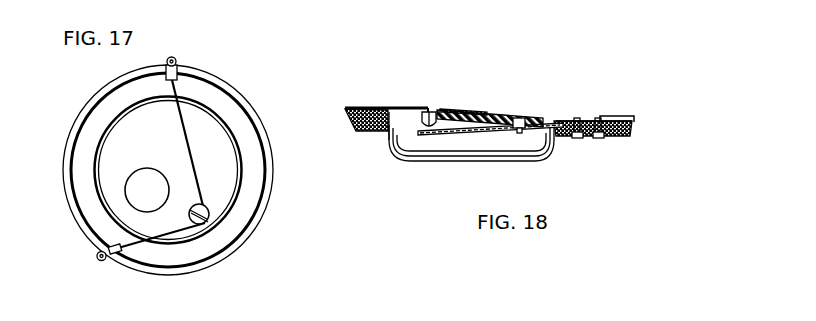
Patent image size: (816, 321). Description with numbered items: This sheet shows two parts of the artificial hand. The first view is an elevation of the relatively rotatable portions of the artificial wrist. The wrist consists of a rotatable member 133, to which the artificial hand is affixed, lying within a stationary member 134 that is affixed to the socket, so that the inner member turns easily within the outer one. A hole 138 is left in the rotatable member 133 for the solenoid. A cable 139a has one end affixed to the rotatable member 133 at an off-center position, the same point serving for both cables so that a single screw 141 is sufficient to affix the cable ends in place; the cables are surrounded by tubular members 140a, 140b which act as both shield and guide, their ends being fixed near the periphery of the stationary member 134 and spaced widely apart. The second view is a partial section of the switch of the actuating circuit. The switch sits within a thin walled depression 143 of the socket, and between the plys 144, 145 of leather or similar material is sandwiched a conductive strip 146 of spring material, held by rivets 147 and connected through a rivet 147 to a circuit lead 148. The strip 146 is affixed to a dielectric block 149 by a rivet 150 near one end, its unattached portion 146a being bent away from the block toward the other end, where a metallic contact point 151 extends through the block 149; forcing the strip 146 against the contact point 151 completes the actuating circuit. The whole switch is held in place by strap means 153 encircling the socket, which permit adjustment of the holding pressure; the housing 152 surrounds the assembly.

In FIG. 17, the rotatable member 133 is at (207, 138).
In FIG. 17, the stationary member 134 is at (248, 140).
In FIG. 17, the hole 138 is at (140, 190).
In FIG. 17, the cable 139a is at (183, 117).
In FIG. 17, the tubular member 140a is at (173, 57).
In FIG. 17, the tubular member 140b is at (155, 237).
In FIG. 17, the screw 141 is at (206, 222).
In FIG. 18, the thin walled depression 143 is at (392, 147).
In FIG. 18, the ply 144 is at (632, 136).
In FIG. 18, the ply 145 is at (633, 122).
In FIG. 18, the conductive strip 146 is at (543, 127).
In FIG. 18, the bent-away portion of conductive strip 146a is at (440, 135).
In FIG. 18, the rivets 147 is at (577, 122).
In FIG. 18, the circuit lead 148 is at (623, 118).
In FIG. 18, the dielectric block 149 is at (530, 118).
In FIG. 18, the rivet 150 is at (518, 118).
In FIG. 18, the metallic contact point 151 is at (430, 116).
In FIG. 18, the housing 152 is at (405, 108).
In FIG. 18, the strap means 153 is at (463, 111).